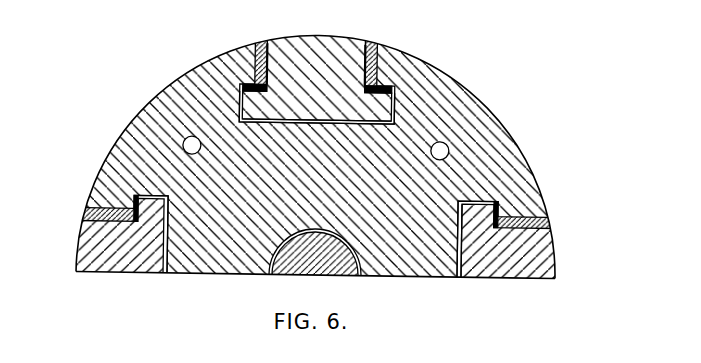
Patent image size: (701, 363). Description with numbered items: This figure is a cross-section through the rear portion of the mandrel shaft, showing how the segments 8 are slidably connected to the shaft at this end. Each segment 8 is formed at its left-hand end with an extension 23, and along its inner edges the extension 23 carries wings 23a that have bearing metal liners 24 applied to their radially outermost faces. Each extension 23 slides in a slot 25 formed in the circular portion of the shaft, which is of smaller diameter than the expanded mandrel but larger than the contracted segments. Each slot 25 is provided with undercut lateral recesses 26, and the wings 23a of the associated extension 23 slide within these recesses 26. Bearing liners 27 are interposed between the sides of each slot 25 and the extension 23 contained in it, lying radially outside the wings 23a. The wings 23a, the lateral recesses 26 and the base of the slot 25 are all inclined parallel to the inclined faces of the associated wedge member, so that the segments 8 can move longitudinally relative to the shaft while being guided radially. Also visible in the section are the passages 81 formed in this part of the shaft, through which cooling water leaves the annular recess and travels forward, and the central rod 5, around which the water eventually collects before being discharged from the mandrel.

The segment 8 is at (318, 40).
The extension 23 is at (294, 50).
The wings 23a is at (238, 101).
The bearing metal liners 24 is at (244, 86).
The slot 25 is at (324, 122).
The undercut lateral recesses 26 is at (392, 107).
The bearing liners 27 is at (256, 46).
The rod 5 is at (293, 247).
The passages 81 is at (198, 150).